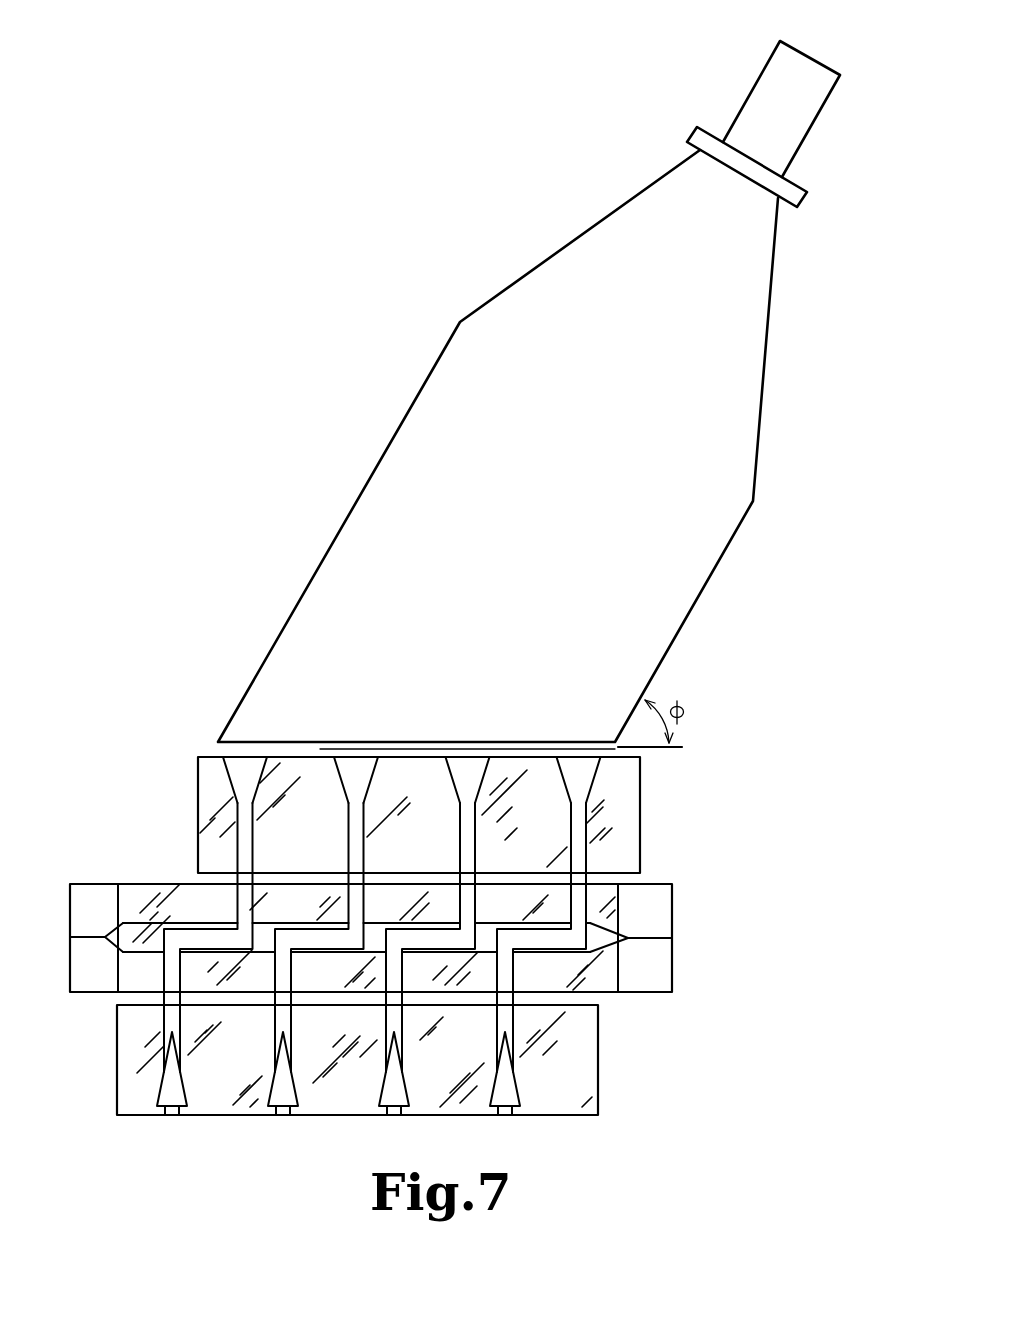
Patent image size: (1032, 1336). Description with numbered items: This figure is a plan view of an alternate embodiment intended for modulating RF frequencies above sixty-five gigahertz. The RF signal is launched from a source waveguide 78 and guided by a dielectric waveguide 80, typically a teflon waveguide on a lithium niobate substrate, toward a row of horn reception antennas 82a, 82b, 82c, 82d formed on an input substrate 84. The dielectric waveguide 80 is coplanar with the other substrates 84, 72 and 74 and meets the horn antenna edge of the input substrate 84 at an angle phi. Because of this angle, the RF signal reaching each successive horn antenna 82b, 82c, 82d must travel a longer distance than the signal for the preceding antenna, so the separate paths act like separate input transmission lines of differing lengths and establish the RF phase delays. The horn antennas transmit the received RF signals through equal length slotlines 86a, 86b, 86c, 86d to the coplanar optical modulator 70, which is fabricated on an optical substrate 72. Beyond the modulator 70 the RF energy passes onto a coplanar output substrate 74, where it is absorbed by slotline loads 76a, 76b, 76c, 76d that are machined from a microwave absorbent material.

The coplanar optical modulator 70 is at (527, 968).
The optical substrate 72 is at (87, 884).
The coplanar output substrate 74 is at (117, 1085).
The slotline load 76a is at (520, 1090).
The slotline load 76b is at (409, 1090).
The slotline load 76c is at (298, 1090).
The slotline load 76d is at (187, 1090).
The source waveguide 78 is at (748, 98).
The dielectric waveguide 80 is at (405, 417).
The horn reception antenna 82a is at (563, 777).
The horn reception antenna 82b is at (452, 777).
The horn reception antenna 82c is at (341, 777).
The horn reception antenna 82d is at (232, 783).
The input substrate 84 is at (640, 800).
The equal length slotline 86a is at (587, 845).
The equal length slotline 86b is at (460, 835).
The equal length slotline 86c is at (348, 835).
The equal length slotline 86d is at (237, 835).